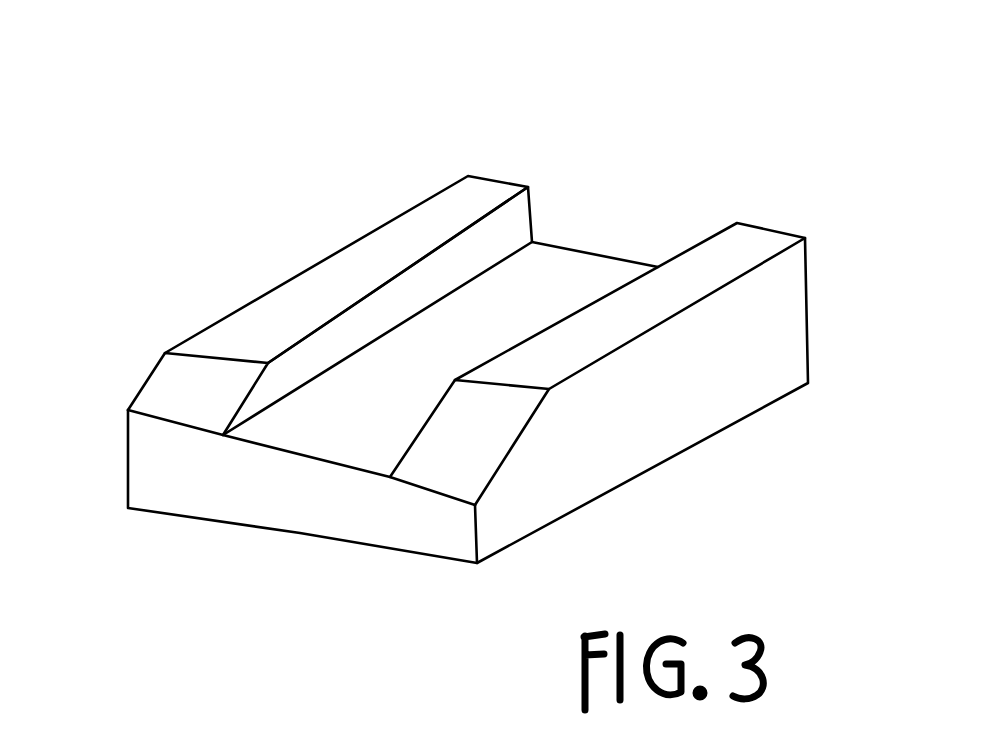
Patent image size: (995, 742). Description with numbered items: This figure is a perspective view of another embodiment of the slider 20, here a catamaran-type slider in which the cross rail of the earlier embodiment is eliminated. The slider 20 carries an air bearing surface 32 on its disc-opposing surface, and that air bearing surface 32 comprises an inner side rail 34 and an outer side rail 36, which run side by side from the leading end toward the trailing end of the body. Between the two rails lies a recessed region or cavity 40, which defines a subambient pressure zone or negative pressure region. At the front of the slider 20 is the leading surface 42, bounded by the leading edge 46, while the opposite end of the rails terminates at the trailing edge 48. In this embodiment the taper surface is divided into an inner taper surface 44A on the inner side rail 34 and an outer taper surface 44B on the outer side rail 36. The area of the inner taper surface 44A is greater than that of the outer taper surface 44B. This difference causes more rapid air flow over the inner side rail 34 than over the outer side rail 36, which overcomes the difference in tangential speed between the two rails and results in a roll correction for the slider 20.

The slider 20 is at (712, 113).
The air bearing surface 32 is at (316, 286).
The inner side rail 34 is at (767, 242).
The outer side rail 36 is at (457, 192).
The recessed region or cavity 40 is at (575, 265).
The leading surface 42 is at (175, 492).
The inner taper surface 44A is at (490, 435).
The outer taper surface 44B is at (163, 385).
The leading edge 46 is at (333, 468).
The trailing edge 48 is at (498, 178).